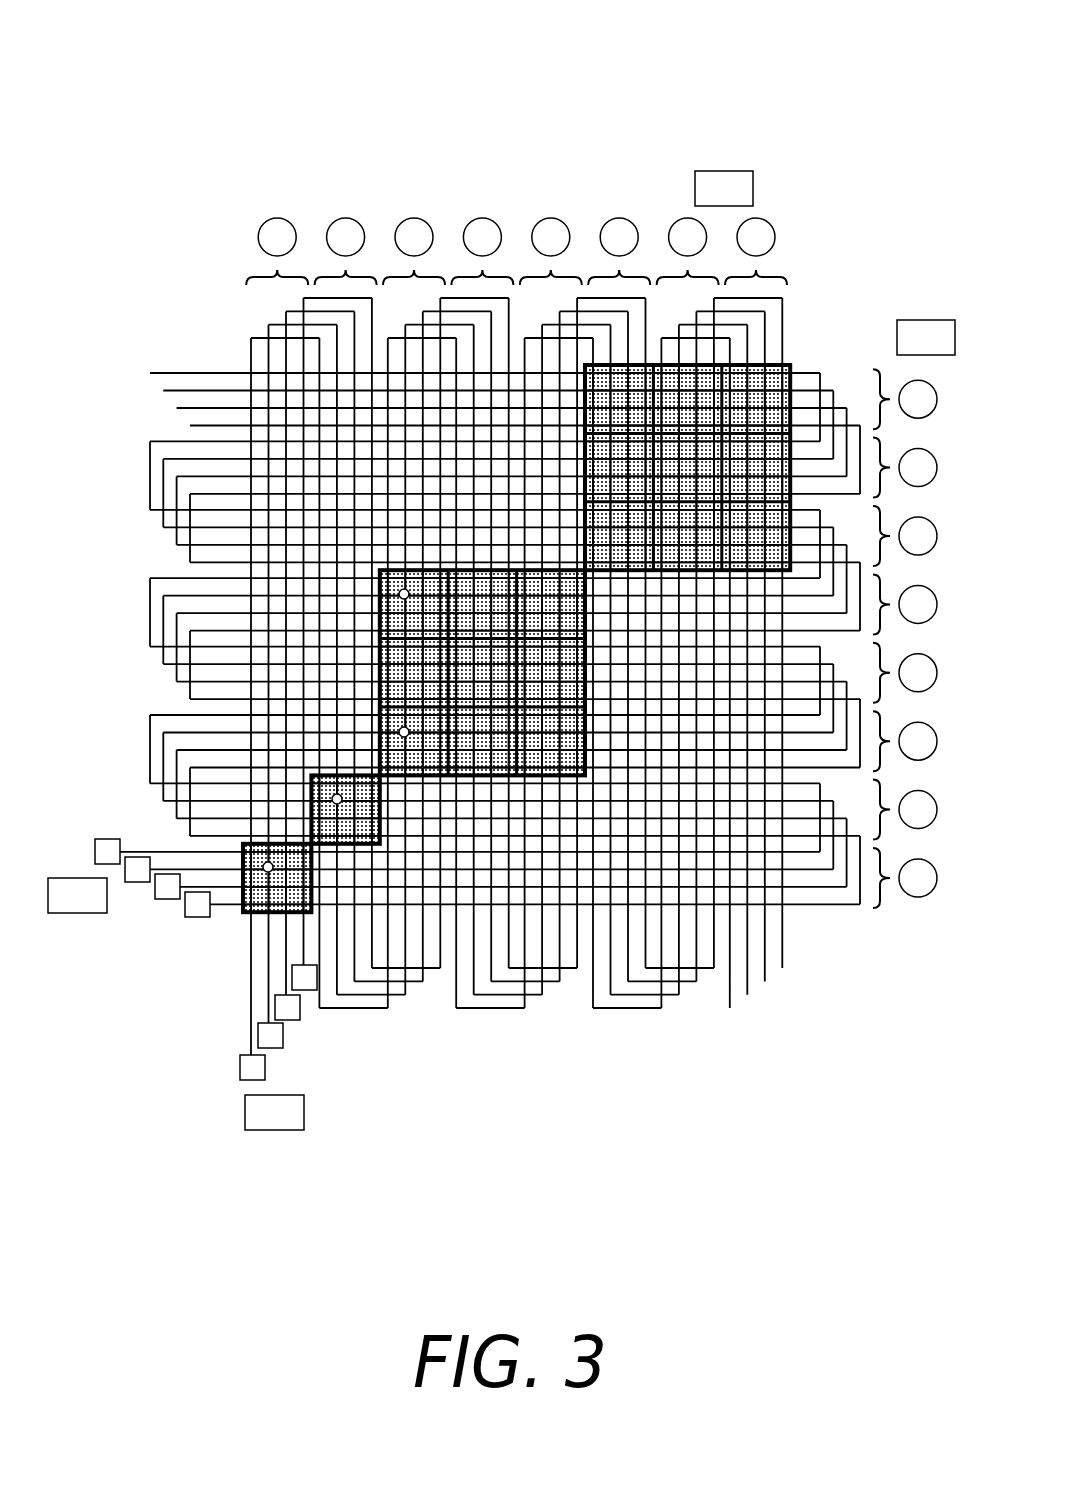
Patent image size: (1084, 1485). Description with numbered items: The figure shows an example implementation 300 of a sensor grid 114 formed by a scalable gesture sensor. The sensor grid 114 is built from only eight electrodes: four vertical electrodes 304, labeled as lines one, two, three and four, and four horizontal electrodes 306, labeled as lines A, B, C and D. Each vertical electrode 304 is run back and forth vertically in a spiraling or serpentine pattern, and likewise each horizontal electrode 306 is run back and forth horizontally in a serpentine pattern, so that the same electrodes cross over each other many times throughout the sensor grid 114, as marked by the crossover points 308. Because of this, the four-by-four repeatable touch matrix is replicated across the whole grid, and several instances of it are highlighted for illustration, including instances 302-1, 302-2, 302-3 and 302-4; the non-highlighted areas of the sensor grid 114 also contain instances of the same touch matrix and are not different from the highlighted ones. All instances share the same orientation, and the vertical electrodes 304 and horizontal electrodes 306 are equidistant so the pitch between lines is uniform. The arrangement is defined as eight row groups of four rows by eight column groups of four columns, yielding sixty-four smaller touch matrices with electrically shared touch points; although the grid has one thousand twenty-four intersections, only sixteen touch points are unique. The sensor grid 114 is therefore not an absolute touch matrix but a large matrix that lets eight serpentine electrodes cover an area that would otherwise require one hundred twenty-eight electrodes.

The example implementation 300 is at (139, 44).
The sensor grid 114 is at (169, 319).
The instance of the repeatable touch matrix 302-1 is at (243, 913).
The instance of the repeatable touch matrix 302-2 is at (410, 773).
The instance of the repeatable touch matrix 302-3 is at (380, 575).
The instance of the repeatable touch matrix 302-4 is at (583, 467).
The vertical electrodes 304 is at (268, 978).
The horizontal electrodes 306 is at (188, 869).
The crossover points 308 is at (266, 864).